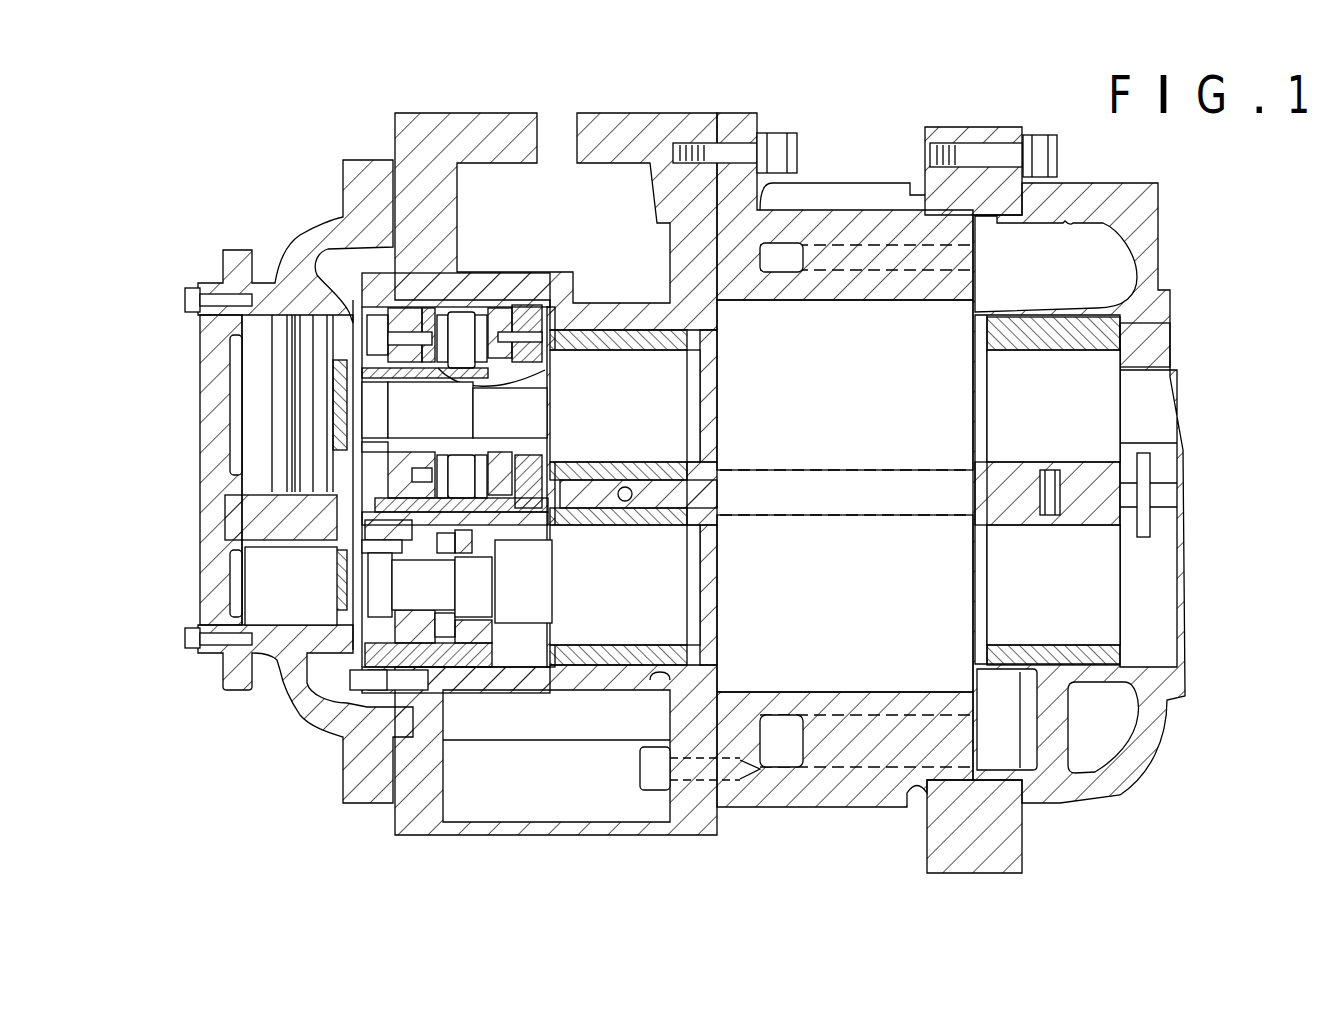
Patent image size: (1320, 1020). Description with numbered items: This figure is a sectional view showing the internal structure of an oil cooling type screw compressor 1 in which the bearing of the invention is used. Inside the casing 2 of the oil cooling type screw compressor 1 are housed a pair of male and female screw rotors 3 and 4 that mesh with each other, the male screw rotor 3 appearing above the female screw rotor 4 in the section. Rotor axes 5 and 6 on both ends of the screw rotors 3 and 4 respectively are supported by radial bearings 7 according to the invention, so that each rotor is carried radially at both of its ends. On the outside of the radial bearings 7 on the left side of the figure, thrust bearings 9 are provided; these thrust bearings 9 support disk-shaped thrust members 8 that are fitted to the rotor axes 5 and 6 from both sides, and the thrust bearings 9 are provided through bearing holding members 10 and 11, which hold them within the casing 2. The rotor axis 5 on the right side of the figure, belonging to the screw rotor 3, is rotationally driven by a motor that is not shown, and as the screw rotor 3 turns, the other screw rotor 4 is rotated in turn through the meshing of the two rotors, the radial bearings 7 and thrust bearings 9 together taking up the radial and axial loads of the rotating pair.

The oil cooling type screw compressor 1 is at (228, 172).
The casing 2 is at (717, 116).
The male screw rotor 3 is at (873, 407).
The female screw rotor 4 is at (873, 590).
The rotor axis 5 is at (608, 360).
The rotor axis 6 is at (1093, 618).
The radial bearing 7 is at (645, 330).
The disk-shaped thrust member 8 is at (460, 290).
The thrust bearing 9 is at (440, 381).
The bearing holding member 10 is at (322, 245).
The bearing holding member 11 is at (320, 318).